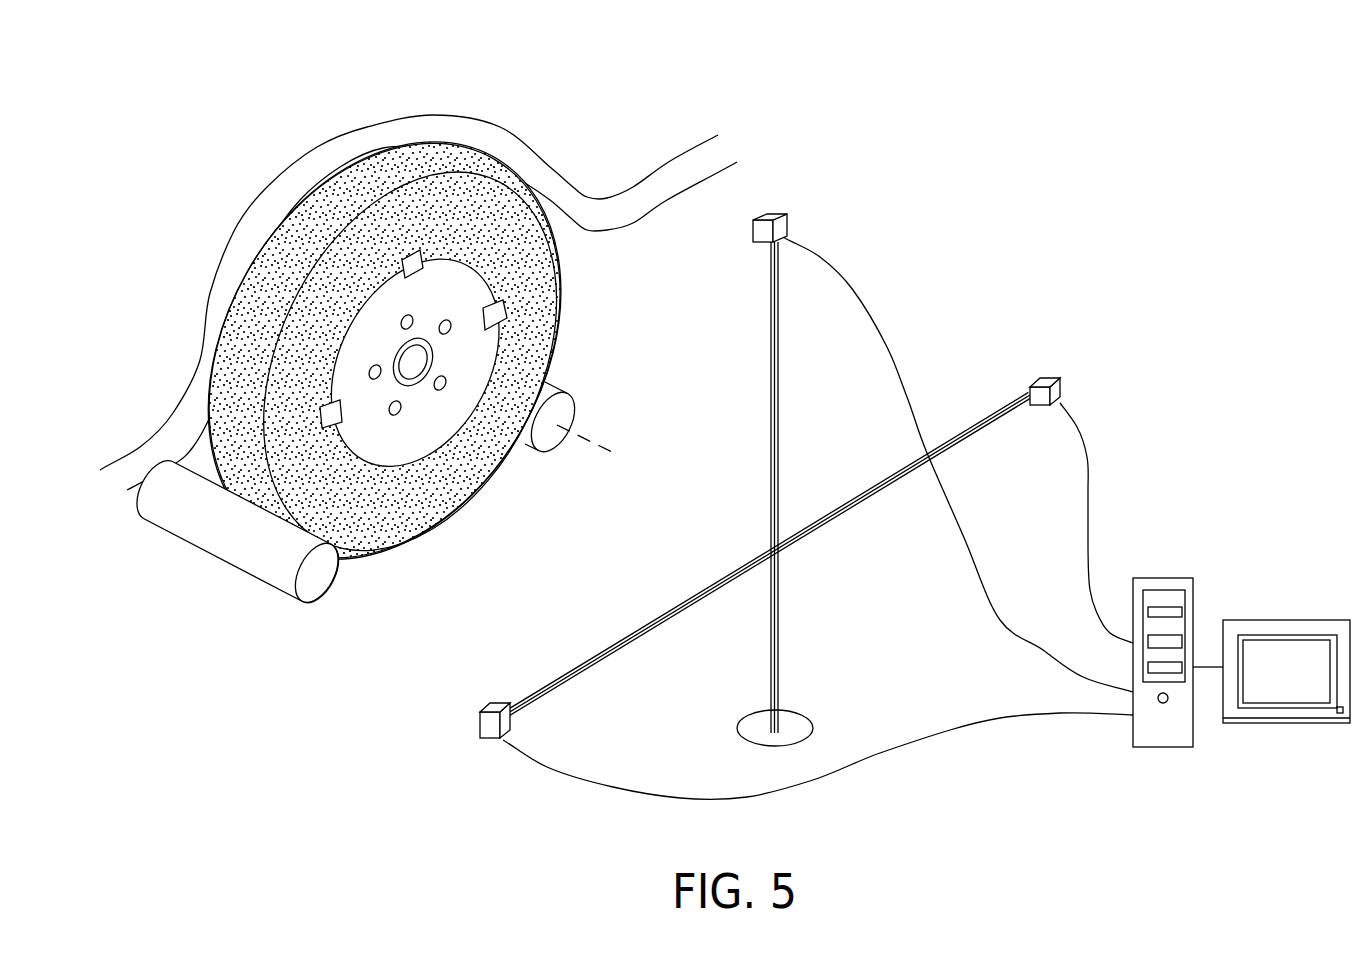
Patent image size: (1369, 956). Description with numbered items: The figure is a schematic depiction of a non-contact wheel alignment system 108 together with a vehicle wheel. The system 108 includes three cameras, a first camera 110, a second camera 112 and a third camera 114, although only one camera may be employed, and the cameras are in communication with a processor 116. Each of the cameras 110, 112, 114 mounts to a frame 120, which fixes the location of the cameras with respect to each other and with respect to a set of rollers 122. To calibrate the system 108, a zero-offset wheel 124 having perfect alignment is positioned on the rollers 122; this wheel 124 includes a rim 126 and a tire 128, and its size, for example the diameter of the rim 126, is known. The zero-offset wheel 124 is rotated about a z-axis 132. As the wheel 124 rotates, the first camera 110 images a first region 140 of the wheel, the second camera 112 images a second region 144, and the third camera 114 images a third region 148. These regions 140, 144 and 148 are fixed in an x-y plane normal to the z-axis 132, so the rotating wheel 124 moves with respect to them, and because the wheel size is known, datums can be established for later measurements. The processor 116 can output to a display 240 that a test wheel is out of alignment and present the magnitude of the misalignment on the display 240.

The non-contact wheel alignment system 108 is at (1009, 293).
The first camera 110 is at (475, 722).
The second camera 112 is at (1062, 392).
The third camera 114 is at (790, 220).
The processor 116 is at (1172, 578).
The frame 120 is at (823, 525).
The rollers 122 is at (567, 413).
The zero-offset wheel 124 is at (541, 187).
The rim 126 is at (440, 428).
The tire 128 is at (410, 527).
The z-axis 132 is at (613, 460).
The first region 140 is at (322, 412).
The second region 144 is at (503, 308).
The third region 148 is at (410, 257).
The display 240 is at (1300, 620).